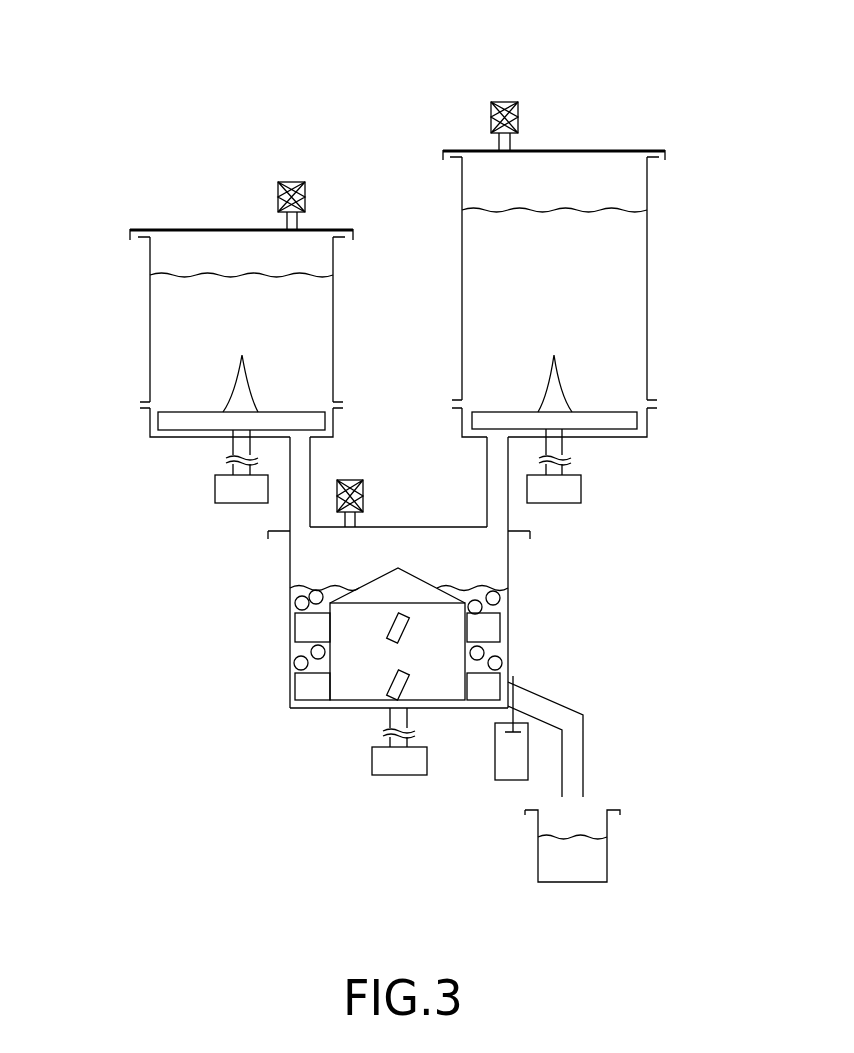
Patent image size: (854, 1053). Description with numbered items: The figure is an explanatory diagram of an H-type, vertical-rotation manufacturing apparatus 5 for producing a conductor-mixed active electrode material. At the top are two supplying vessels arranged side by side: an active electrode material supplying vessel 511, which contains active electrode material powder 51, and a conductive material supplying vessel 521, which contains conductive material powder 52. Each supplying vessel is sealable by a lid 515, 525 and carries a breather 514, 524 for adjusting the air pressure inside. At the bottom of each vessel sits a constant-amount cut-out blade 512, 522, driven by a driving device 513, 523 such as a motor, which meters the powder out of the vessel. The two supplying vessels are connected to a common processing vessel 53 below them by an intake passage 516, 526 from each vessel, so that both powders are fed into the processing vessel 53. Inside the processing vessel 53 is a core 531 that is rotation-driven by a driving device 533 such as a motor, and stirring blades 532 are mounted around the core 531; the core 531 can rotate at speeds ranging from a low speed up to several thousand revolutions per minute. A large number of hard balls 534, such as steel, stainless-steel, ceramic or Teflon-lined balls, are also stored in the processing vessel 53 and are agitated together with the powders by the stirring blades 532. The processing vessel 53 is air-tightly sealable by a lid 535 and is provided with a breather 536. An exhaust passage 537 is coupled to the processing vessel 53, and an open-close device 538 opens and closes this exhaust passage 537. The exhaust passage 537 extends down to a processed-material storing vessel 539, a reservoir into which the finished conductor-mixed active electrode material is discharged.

The liquid supply apparatus 5 is at (356, 92).
The active electrode material powder 51 is at (173, 349).
The active electrode material supplying vessel 511 is at (150, 292).
The constant-amount cut-out blade 512 is at (167, 420).
The driving device 513 is at (213, 478).
The breather 514 is at (291, 181).
The lid 515 is at (192, 228).
The intake passage 516 is at (283, 509).
The conductive material powder 52 is at (625, 289).
The conductive material supplying vessel 521 is at (648, 230).
The constant-amount cut-out blade 522 is at (633, 418).
The driving device 523 is at (582, 490).
The breather 524 is at (503, 101).
The lid 525 is at (590, 148).
The intake passage 526 is at (510, 505).
The processing vessel 53 is at (508, 565).
The core 531 is at (355, 688).
The stirring blades 532 is at (400, 613).
The driving device 533 is at (371, 762).
The hard balls 534 is at (294, 662).
The lid 535 is at (440, 500).
The breather 536 is at (350, 479).
The exhaust passage 537 is at (587, 757).
The open-close device 538 is at (506, 782).
The processed-material storing vessel 539 is at (573, 884).